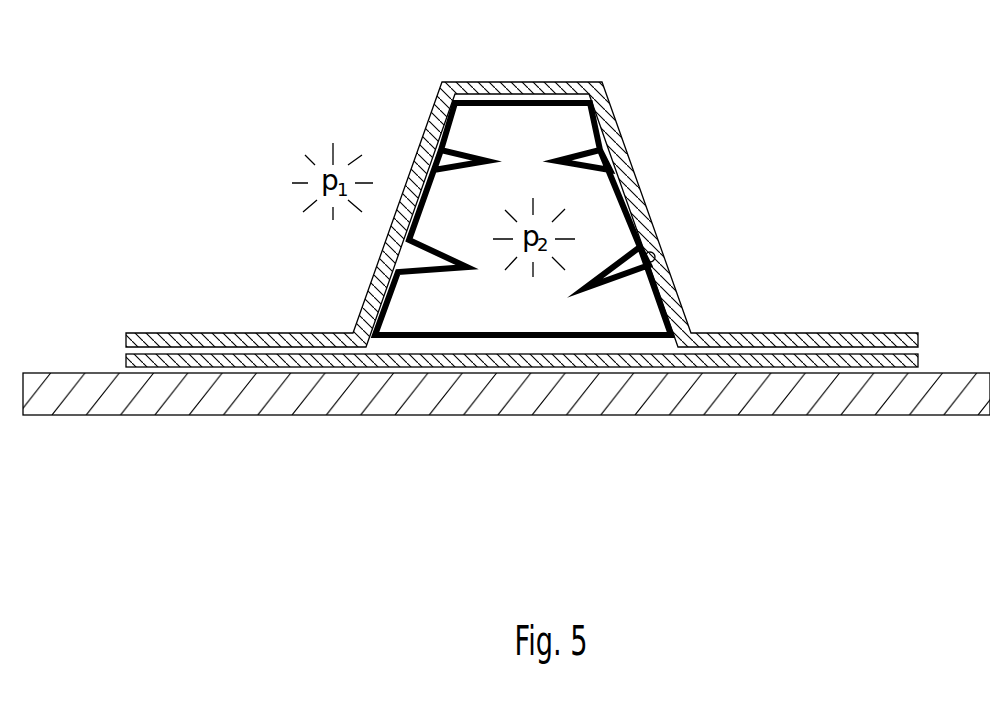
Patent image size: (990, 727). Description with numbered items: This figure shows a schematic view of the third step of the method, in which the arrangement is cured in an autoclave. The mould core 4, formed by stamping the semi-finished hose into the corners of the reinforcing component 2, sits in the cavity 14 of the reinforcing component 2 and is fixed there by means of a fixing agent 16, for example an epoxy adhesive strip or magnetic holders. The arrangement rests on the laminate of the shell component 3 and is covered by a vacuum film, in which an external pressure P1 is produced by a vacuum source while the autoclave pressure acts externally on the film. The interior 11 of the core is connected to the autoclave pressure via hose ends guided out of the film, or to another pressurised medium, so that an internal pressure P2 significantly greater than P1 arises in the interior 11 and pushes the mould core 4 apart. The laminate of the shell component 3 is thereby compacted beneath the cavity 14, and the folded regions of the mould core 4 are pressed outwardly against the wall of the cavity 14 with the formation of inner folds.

The reinforcing component 2 is at (492, 88).
The shell component 3 is at (218, 398).
The mould core 4 is at (596, 123).
The interior of the core 11 is at (632, 311).
The cavity 14 is at (654, 252).
The fixing agent 16 is at (913, 358).